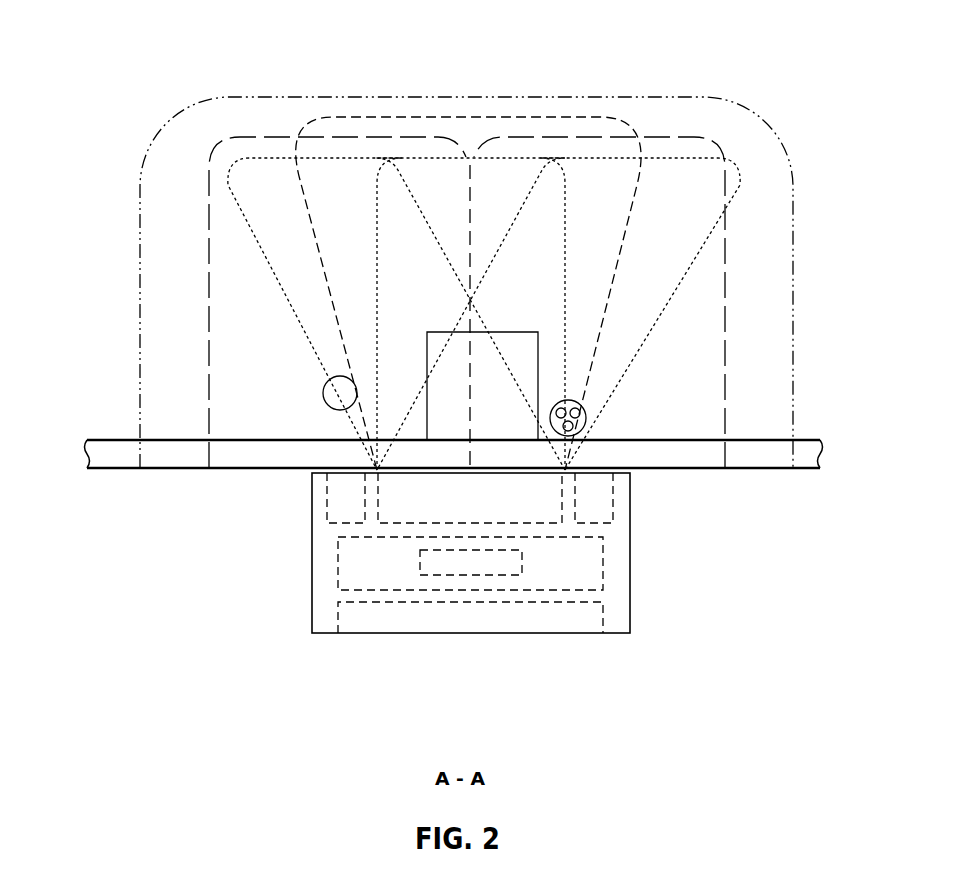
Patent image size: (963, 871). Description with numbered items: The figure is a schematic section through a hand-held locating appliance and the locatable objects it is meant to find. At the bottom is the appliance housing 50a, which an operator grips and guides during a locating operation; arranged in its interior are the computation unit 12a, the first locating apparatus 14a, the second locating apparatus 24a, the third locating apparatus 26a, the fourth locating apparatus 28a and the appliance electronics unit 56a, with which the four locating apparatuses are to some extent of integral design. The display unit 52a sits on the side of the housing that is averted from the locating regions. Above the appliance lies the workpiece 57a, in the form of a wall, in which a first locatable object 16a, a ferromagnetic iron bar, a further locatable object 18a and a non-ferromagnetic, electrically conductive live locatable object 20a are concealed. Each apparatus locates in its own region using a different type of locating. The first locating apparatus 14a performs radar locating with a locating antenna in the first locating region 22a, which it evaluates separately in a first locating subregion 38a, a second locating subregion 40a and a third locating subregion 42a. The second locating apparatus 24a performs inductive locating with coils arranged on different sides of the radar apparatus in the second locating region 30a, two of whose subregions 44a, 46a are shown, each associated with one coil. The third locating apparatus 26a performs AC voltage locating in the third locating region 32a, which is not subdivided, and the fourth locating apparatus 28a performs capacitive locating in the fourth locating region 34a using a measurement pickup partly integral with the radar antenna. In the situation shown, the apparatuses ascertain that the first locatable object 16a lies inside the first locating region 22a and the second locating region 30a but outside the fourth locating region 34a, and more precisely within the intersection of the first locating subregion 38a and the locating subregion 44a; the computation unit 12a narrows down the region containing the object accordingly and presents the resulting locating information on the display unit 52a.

The computation unit 12a is at (487, 563).
The first locating apparatus 14a is at (497, 574).
The fourth locating apparatus 28a is at (542, 508).
The first locatable object 16a is at (323, 397).
The locatable object 18a is at (440, 335).
The locatable object 20a is at (586, 423).
The first locating region 22a is at (484, 260).
The first locating subregion 38a is at (263, 152).
The second locating subregion 40a is at (470, 155).
The third locating subregion 42a is at (687, 153).
The second locating apparatus 24a is at (473, 499).
The third locating apparatus 26a is at (340, 503).
The second locating region 30a is at (467, 250).
The locating subregion 44a is at (287, 133).
The locating subregion 46a is at (652, 133).
The third locating region 32a is at (768, 120).
The fourth locating region 34a is at (448, 113).
The appliance housing 50a is at (312, 600).
The display unit 52a is at (447, 618).
The appliance electronics unit 56a is at (370, 572).
The workpiece 57a is at (185, 480).